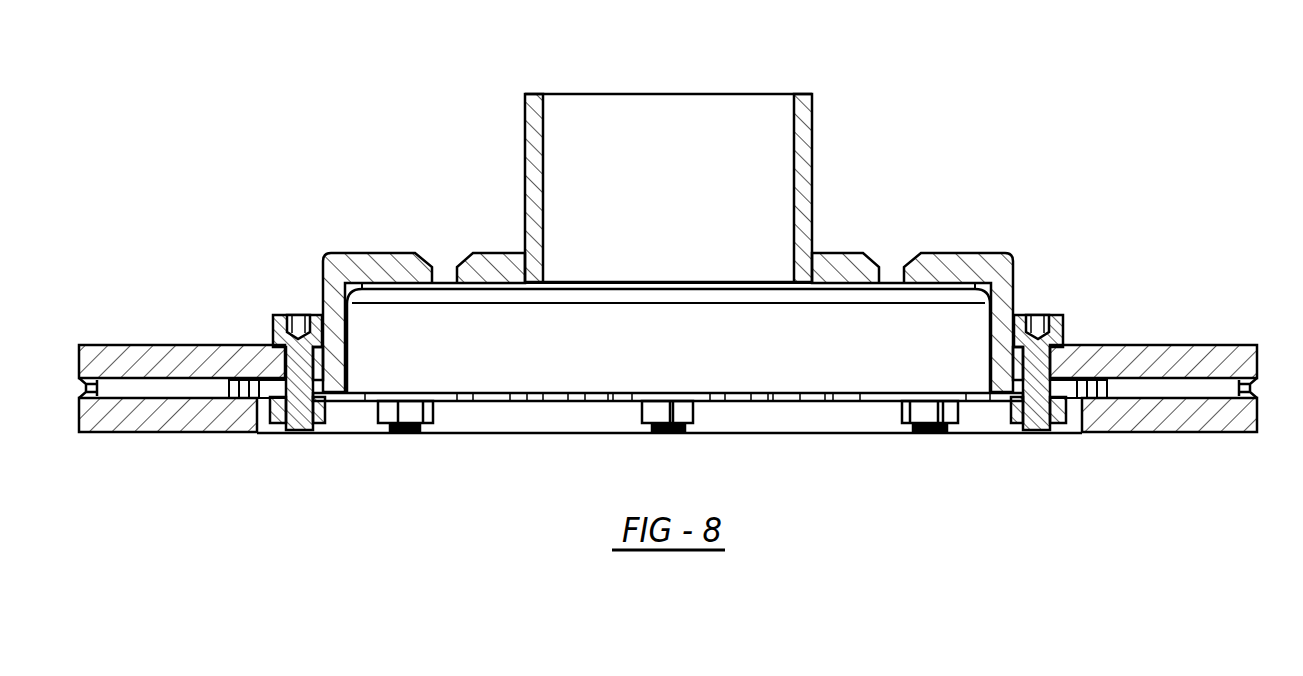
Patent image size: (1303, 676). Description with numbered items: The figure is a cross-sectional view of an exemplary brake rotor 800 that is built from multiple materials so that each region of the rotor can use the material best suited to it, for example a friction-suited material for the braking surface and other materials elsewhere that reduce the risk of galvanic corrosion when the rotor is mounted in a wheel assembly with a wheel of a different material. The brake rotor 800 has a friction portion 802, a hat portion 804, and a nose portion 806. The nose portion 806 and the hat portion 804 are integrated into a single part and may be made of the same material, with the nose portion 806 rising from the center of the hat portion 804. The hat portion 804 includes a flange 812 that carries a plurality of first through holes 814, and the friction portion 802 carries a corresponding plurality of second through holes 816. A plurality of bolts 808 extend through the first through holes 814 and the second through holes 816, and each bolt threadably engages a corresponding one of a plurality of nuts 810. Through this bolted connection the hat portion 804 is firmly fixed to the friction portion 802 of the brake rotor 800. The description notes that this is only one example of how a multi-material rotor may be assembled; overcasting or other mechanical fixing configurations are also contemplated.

The brake rotor 800 is at (262, 71).
The friction portion 802 is at (145, 362).
The hat portion 804 is at (1036, 242).
The nose portion 806 is at (848, 117).
The bolts 808 is at (1090, 302).
The nuts 810 is at (1066, 413).
The flange 812 is at (1070, 384).
The first through holes 814 is at (275, 388).
The second through holes 816 is at (283, 360).